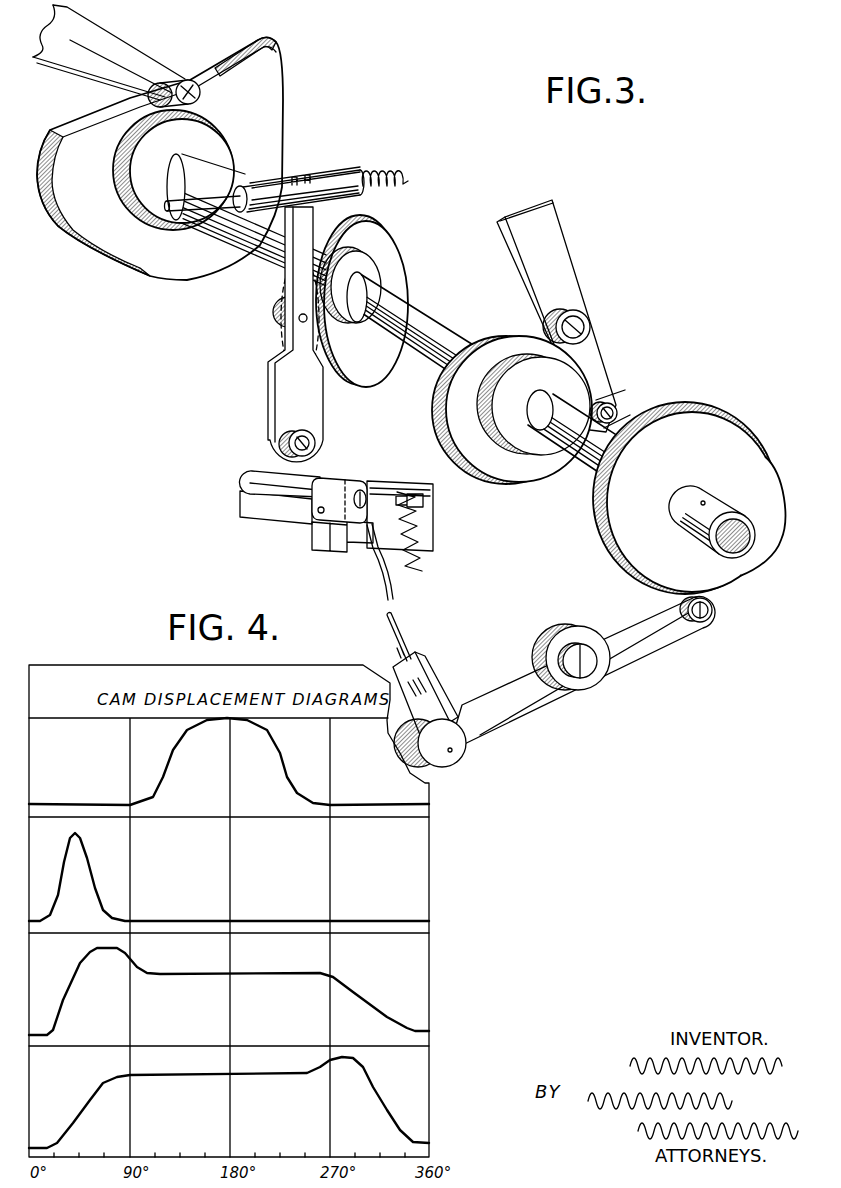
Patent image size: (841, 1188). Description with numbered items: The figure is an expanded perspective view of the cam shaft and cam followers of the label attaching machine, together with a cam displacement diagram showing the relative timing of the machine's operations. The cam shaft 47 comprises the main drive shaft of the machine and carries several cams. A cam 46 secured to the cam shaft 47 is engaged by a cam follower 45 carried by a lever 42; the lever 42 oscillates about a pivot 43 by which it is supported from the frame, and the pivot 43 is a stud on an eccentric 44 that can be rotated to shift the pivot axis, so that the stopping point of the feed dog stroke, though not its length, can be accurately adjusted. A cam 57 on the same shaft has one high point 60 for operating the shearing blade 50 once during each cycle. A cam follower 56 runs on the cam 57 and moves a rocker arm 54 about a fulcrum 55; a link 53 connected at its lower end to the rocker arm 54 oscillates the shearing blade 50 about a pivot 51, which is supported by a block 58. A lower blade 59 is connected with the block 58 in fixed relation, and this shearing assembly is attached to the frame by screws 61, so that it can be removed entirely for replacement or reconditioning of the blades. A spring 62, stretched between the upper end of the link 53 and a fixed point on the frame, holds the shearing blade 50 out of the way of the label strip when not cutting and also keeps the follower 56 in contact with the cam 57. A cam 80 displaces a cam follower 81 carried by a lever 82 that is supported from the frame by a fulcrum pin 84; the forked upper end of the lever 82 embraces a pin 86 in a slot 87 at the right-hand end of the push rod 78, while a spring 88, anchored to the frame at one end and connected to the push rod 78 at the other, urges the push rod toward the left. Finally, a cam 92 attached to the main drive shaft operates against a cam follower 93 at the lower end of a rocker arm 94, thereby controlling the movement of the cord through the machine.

In FIG. 3, the lever 42 is at (560, 252).
In FIG. 3, the pivot 43 is at (618, 412).
In FIG. 3, the eccentric 44 is at (613, 400).
In FIG. 3, the cam follower 45 is at (593, 320).
In FIG. 3, the cam 46 is at (577, 378).
In FIG. 4, the cam 46 is at (410, 797).
In FIG. 3, the cam shaft 47 is at (583, 467).
In FIG. 3, the shearing blade 50 is at (270, 497).
In FIG. 3, the pivot 51 is at (320, 512).
In FIG. 3, the link 53 is at (400, 638).
In FIG. 3, the rocker arm 54 is at (527, 710).
In FIG. 3, the fulcrum 55 is at (590, 668).
In FIG. 3, the cam follower 56 is at (700, 622).
In FIG. 3, the cam 57 is at (689, 506).
In FIG. 4, the cam 57 is at (414, 911).
In FIG. 3, the block 58 is at (430, 488).
In FIG. 3, the lower blade 59 is at (278, 510).
In FIG. 3, the high point 60 is at (758, 552).
In FIG. 3, the screws 61 is at (393, 513).
In FIG. 3, the spring 62 is at (413, 540).
In FIG. 3, the push rod 78 is at (180, 218).
In FIG. 3, the cam 80 is at (387, 257).
In FIG. 4, the cam 80 is at (416, 1025).
In FIG. 3, the cam follower 81 is at (280, 320).
In FIG. 3, the lever 82 is at (283, 385).
In FIG. 3, the fulcrum pin 84 is at (290, 452).
In FIG. 3, the pin 86 is at (347, 193).
In FIG. 3, the slot 87 is at (330, 173).
In FIG. 3, the spring 88 is at (390, 170).
In FIG. 3, the cam 92 is at (273, 78).
In FIG. 4, the cam 92 is at (424, 1133).
In FIG. 3, the cam follower 93 is at (173, 70).
In FIG. 3, the rocker arm 94 is at (98, 38).